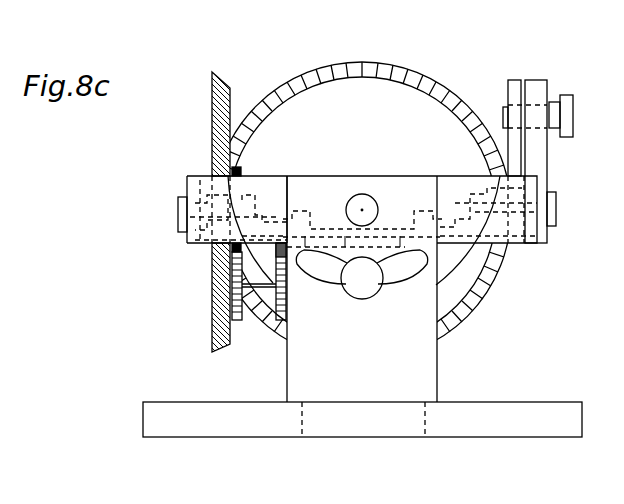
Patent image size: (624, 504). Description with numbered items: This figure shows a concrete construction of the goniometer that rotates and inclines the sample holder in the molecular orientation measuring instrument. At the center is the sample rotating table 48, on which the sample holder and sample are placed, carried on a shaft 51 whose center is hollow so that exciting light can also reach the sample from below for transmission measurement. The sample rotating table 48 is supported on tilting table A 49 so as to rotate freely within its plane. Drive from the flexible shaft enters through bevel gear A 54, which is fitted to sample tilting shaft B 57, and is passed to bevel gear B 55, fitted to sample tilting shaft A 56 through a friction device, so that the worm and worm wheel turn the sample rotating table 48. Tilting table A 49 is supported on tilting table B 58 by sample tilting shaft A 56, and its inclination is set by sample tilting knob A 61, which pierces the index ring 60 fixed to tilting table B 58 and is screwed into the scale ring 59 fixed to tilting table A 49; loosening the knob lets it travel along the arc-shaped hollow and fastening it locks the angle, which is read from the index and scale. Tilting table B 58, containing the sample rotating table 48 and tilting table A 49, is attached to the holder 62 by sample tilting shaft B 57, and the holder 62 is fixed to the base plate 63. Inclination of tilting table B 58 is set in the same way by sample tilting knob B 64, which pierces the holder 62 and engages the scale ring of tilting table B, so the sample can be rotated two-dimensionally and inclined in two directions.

The sample rotating table 48 is at (314, 177).
The tilting table A 49 is at (507, 232).
The shaft of the sample rotating table 51 is at (377, 213).
The bevel gear A 54 is at (302, 74).
The bevel gear B 55 is at (213, 120).
The sample tilting shaft A 56 is at (178, 217).
The sample tilting shaft B 57 is at (359, 195).
The tilting table B 58 is at (192, 182).
The scale ring 59 is at (515, 83).
The index ring 60 is at (540, 82).
The sample tilting knob A 61 is at (570, 118).
The holder 62 is at (384, 372).
The base plate 63 is at (202, 424).
The sample tilting knob B 64 is at (364, 287).